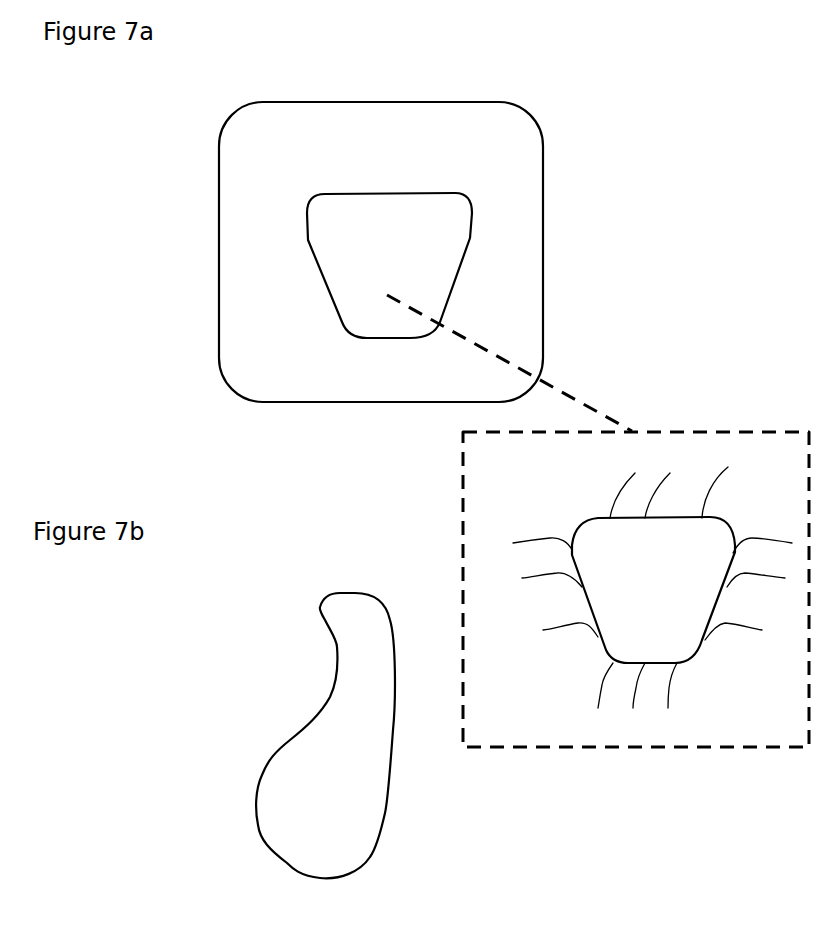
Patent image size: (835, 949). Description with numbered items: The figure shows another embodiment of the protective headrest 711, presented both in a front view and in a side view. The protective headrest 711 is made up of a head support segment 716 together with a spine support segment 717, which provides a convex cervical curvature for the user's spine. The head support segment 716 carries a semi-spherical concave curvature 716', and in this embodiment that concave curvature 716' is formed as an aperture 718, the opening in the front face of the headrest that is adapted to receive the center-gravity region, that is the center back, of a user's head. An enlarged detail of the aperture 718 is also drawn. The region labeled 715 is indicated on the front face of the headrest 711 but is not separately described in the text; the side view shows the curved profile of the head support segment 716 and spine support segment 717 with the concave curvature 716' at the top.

In FIG. 7A, the protective headrest 711 is at (448, 142).
In FIG. 7B, the protective headrest 711 is at (367, 787).
In FIG. 7A, the outer surface 715 is at (263, 247).
In FIG. 7A, the head support segment 716 is at (221, 352).
In FIG. 7B, the head support segment 716 is at (213, 718).
In FIG. 7A, the semi-spherical concave curvature 716' is at (224, 190).
In FIG. 7B, the semi-spherical concave curvature 716' is at (216, 590).
In FIG. 7A, the spine support segment 717 is at (372, 362).
In FIG. 7B, the spine support segment 717 is at (283, 803).
In FIG. 7A, the aperture 718 is at (427, 245).